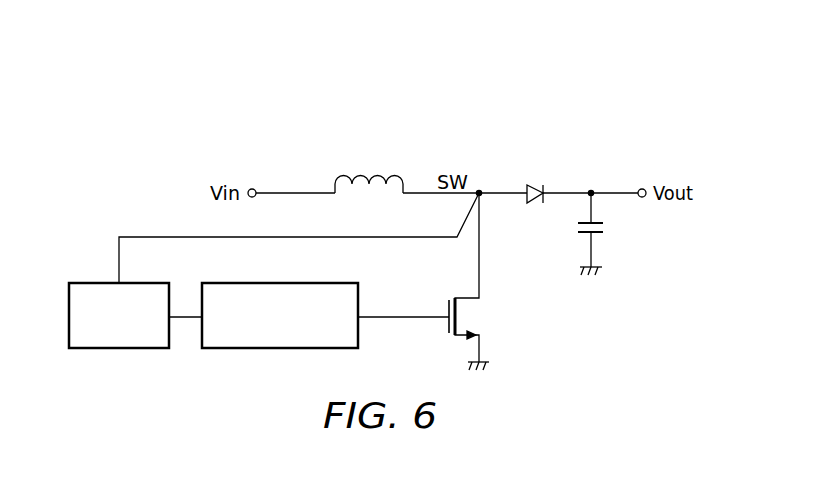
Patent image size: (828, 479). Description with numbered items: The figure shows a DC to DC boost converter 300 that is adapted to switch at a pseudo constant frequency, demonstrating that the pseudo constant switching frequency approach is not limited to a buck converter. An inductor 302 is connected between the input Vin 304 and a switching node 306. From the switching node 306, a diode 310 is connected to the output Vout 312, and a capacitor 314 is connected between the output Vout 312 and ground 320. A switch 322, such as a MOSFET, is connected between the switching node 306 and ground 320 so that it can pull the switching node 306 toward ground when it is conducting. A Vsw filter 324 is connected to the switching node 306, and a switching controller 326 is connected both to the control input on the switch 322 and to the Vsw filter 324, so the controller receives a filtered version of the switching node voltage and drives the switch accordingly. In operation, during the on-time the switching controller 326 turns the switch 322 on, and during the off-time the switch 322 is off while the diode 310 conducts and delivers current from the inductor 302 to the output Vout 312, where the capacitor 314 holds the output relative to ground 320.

The DC to DC boost converter 300 is at (601, 123).
The inductor 302 is at (361, 173).
The input Vin 304 is at (251, 189).
The switching node 306 is at (484, 199).
The diode 310 is at (537, 185).
The output Vout 312 is at (644, 188).
The capacitor 314 is at (605, 226).
The ground 320 is at (605, 270).
The switch 322 is at (448, 330).
The Vsw filter 324 is at (112, 352).
The switching controller 326 is at (279, 352).